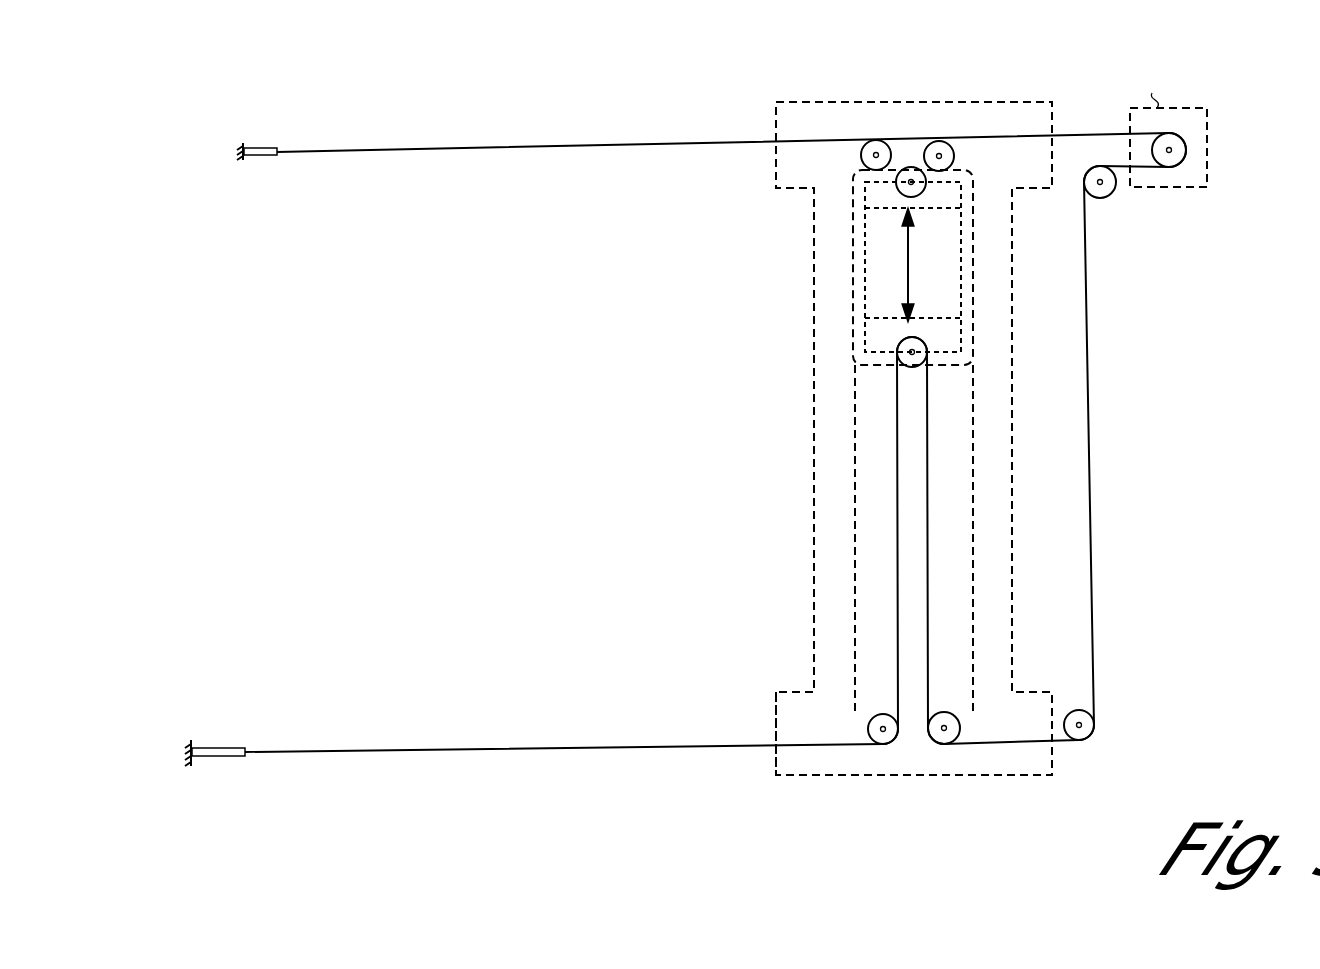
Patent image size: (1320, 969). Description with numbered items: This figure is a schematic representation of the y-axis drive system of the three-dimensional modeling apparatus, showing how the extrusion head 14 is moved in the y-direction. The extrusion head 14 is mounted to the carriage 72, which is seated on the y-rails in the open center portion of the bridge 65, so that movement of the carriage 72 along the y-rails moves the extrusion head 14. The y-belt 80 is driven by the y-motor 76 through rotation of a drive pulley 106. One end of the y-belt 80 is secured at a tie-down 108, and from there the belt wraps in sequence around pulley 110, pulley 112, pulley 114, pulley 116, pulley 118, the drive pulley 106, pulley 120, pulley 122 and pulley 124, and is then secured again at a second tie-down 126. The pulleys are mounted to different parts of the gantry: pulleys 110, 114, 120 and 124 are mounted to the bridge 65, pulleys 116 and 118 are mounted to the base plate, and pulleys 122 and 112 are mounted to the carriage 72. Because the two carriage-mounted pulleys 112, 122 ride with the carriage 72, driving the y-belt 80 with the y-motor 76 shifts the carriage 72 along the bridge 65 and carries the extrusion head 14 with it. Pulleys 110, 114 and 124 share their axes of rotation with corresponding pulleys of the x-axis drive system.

The extrusion head 14 is at (943, 293).
The bridge 65 is at (782, 769).
The carriage 72 is at (972, 348).
The y-motor 76 is at (1200, 172).
The y-drive belt 80 is at (545, 750).
The drive pulley 106 is at (1172, 166).
The tie-down 108 is at (222, 757).
The pulley 110 is at (883, 742).
The pulley 112 is at (900, 346).
The pulley 114 is at (944, 742).
The pulley 116 is at (1092, 711).
The pulley 118 is at (1105, 195).
The pulley 120 is at (937, 141).
The pulley 122 is at (911, 167).
The pulley 124 is at (874, 141).
The tie-down 126 is at (258, 148).